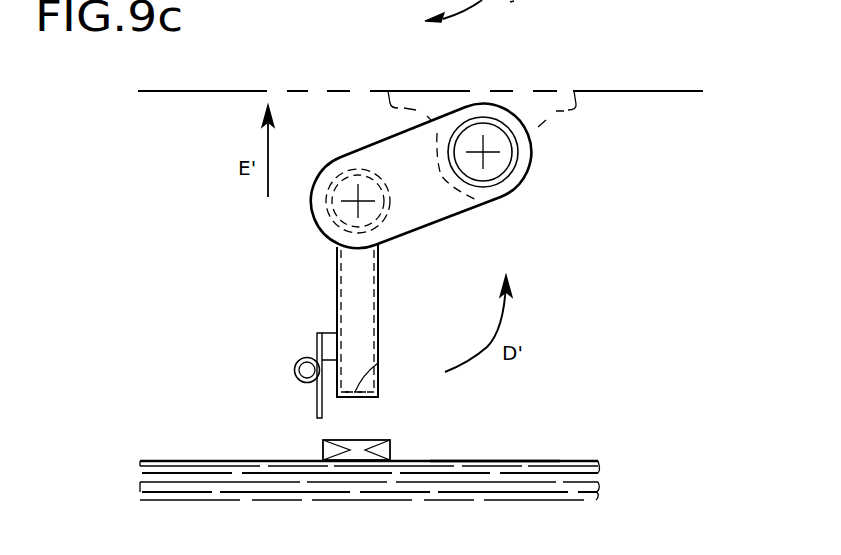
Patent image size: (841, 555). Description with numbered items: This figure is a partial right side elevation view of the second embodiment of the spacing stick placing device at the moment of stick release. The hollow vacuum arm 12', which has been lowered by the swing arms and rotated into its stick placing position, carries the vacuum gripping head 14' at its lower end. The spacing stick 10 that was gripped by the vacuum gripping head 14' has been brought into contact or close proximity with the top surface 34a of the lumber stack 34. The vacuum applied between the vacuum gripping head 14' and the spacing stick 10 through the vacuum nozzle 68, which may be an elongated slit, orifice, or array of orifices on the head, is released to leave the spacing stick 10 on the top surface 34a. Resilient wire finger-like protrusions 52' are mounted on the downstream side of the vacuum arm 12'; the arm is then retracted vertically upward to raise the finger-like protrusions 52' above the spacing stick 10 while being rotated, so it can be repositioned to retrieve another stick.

The vacuum arm 12' is at (421, 250).
The vacuum nozzle 68 is at (378, 363).
The vacuum gripping head 14' is at (394, 400).
The finger-like protrusions 52' is at (274, 375).
The spacing stick 10 is at (356, 450).
The lumber stack 34 is at (381, 497).
The top surface 34a is at (483, 462).